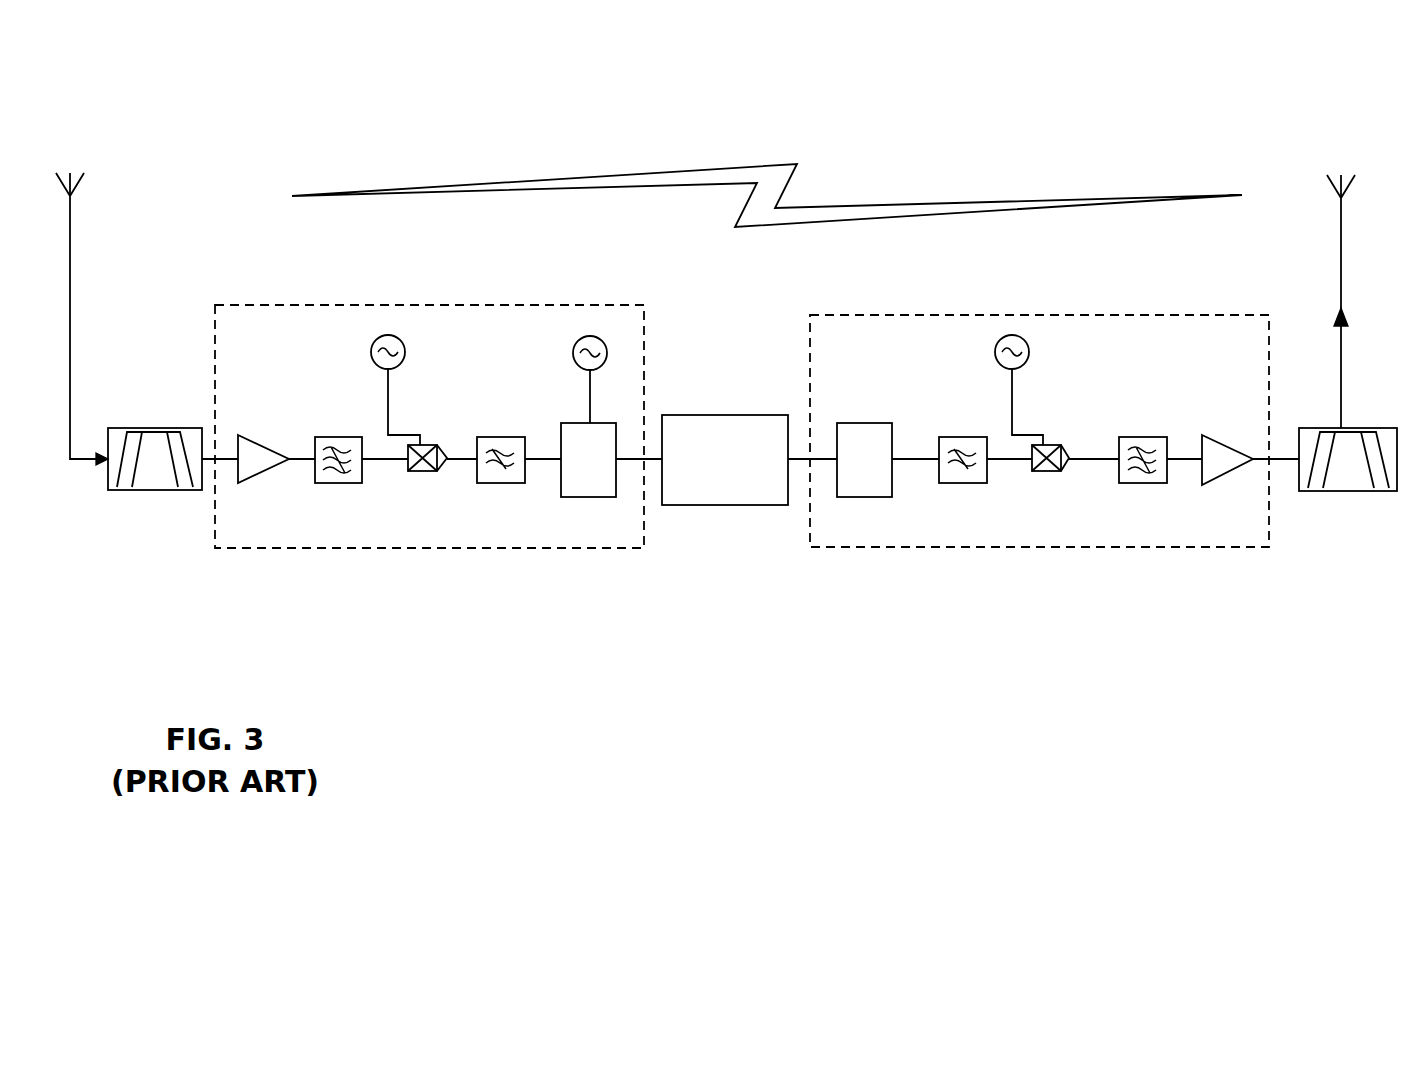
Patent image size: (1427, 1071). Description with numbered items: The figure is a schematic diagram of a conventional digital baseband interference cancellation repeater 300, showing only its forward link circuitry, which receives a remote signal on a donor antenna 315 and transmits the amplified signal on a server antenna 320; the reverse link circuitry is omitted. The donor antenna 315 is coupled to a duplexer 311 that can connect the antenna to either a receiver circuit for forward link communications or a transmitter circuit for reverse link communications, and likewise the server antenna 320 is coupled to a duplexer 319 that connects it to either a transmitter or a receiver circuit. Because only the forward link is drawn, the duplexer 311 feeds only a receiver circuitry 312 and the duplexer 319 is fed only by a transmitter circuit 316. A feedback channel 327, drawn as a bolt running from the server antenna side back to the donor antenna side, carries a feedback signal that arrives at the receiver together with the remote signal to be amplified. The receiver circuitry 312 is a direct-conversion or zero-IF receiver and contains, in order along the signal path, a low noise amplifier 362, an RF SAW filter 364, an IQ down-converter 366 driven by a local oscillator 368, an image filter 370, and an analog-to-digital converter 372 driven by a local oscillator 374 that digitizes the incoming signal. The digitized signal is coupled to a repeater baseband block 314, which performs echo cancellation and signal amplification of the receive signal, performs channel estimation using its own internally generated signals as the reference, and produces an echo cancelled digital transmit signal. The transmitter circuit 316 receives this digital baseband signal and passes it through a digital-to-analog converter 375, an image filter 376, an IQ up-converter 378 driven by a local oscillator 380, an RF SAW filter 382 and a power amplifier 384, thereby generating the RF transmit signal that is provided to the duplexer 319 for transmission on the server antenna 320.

The repeater 300 is at (257, 168).
The duplexer 311 is at (125, 428).
The receiver circuitry 312 is at (383, 548).
The repeater baseband block 314 is at (703, 505).
The donor antenna 315 is at (71, 263).
The transmitter circuit 316 is at (920, 548).
The duplexer 319 is at (1365, 428).
The server antenna 320 is at (1343, 268).
The feedback channel 327 is at (926, 204).
The low noise amplifier 362 is at (255, 440).
The RF SAW filter 364 is at (340, 436).
The IQ down-converter 366 is at (425, 444).
The local oscillator 368 is at (406, 352).
The image filter 370 is at (501, 436).
The analog-to-digital converter 372 is at (600, 497).
The local oscillator 374 is at (573, 355).
The digital-to-analog converter 375 is at (865, 422).
The image filter 376 is at (958, 436).
The IQ up-converter 378 is at (1051, 444).
The local oscillator 380 is at (1030, 352).
The RF SAW filter 382 is at (1141, 436).
The power amplifier 384 is at (1220, 436).